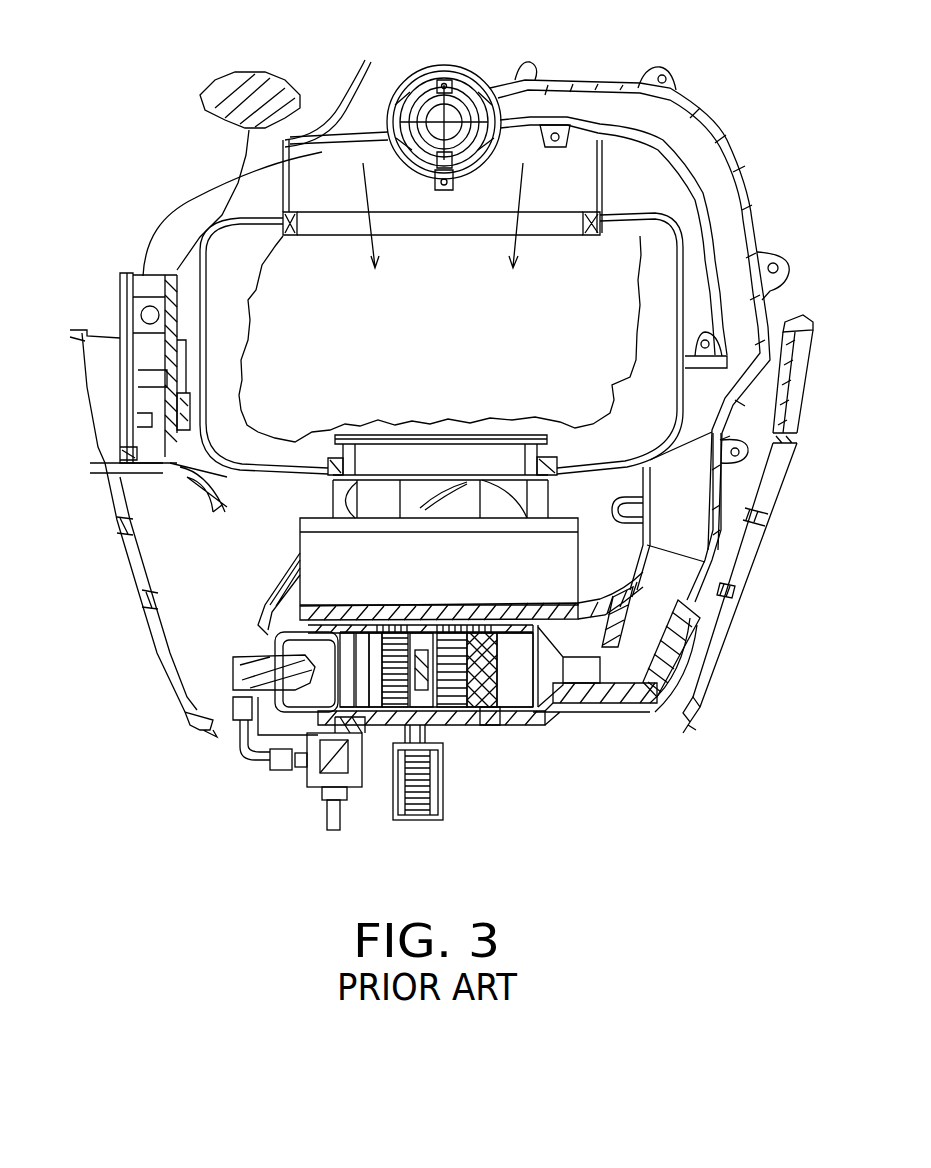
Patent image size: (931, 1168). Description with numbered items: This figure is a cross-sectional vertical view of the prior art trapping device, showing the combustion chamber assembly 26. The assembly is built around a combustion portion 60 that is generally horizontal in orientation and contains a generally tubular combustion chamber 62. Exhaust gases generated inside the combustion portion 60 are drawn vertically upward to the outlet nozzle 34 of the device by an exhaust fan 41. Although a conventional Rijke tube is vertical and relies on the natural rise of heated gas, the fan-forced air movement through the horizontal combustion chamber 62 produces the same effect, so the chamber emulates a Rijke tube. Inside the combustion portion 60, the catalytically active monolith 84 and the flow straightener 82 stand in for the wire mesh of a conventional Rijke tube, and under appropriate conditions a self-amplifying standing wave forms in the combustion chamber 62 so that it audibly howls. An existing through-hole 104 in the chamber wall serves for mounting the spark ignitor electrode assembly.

The combustion chamber assembly 26 is at (560, 743).
The outlet nozzle 34 is at (420, 77).
The exhaust fan 41 is at (450, 117).
The combustion portion 60 is at (505, 715).
The combustion chamber 62 is at (527, 695).
The flow straightener 82 is at (390, 690).
The catalytically active monolith 84 is at (487, 727).
The through-hole 104 is at (433, 815).